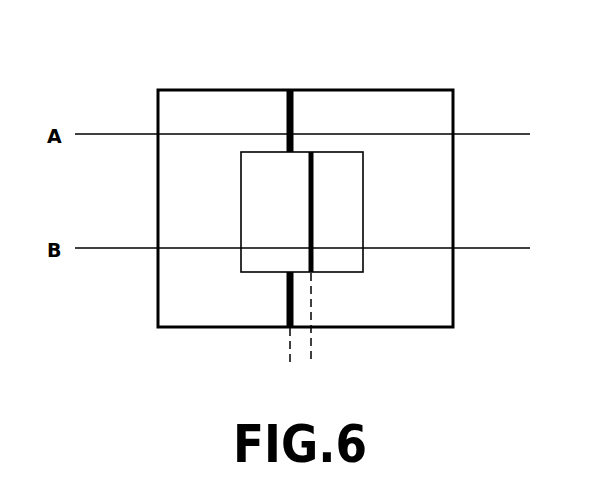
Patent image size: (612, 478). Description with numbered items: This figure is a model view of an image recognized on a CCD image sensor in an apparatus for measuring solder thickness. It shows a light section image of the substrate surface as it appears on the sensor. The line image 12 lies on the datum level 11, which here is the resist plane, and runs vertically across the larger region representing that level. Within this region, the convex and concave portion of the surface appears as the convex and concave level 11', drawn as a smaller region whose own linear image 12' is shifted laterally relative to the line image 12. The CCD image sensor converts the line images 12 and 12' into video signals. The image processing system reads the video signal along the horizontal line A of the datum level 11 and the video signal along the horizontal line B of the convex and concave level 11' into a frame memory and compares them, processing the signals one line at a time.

The datum level 11 is at (328, 173).
The convex and concave level 11' is at (392, 212).
The line image 12 is at (295, 190).
The linear image 12' is at (372, 271).